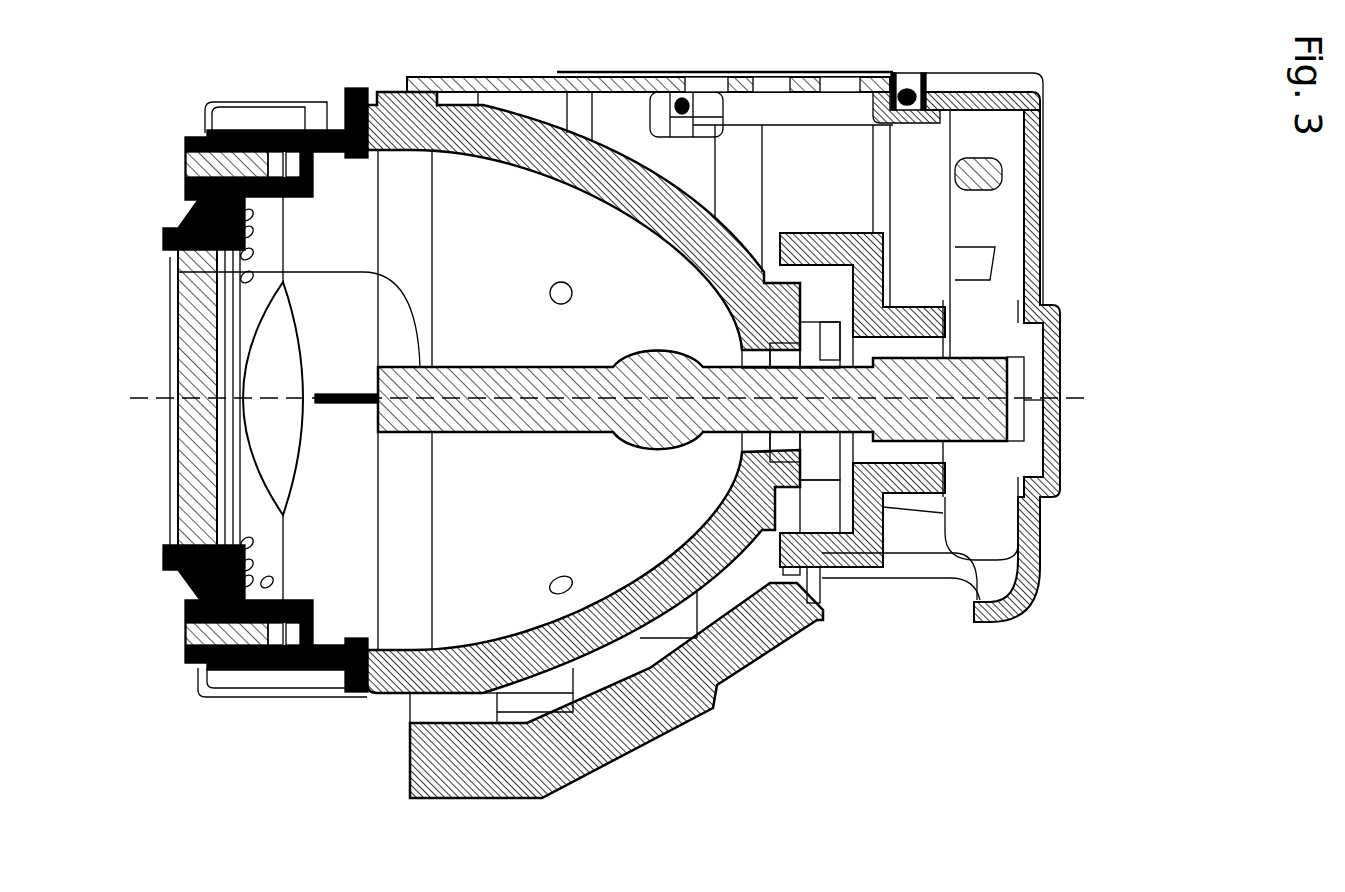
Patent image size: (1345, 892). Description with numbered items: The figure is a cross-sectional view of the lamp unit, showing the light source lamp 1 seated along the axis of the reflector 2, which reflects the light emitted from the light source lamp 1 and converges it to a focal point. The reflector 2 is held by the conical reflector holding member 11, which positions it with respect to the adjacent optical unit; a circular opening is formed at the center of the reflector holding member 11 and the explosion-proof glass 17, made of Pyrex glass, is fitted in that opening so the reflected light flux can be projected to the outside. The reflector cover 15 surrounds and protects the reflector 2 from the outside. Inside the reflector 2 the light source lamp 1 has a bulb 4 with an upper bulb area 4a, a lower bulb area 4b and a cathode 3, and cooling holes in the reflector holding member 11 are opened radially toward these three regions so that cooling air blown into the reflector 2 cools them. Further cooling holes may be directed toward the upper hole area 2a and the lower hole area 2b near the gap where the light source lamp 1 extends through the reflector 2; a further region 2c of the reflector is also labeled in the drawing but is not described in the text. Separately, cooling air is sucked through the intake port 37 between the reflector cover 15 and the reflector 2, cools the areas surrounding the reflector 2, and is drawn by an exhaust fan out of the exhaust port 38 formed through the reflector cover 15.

The light source lamp 1 is at (418, 262).
The reflector 2 is at (639, 405).
The upper hole area 2a is at (737, 317).
The lower hole area 2b is at (740, 450).
The bearing bracket 2c is at (820, 577).
The cathode 3 is at (226, 399).
The bulb 4 is at (661, 288).
The upper bulb area 4a is at (655, 350).
The lower bulb area 4b is at (627, 447).
The reflector holding member 11 is at (195, 582).
The reflector cover 15 is at (1043, 176).
The explosion-proof glass 17 is at (182, 435).
The intake port 37 is at (417, 700).
The exhaust port 38 is at (833, 90).